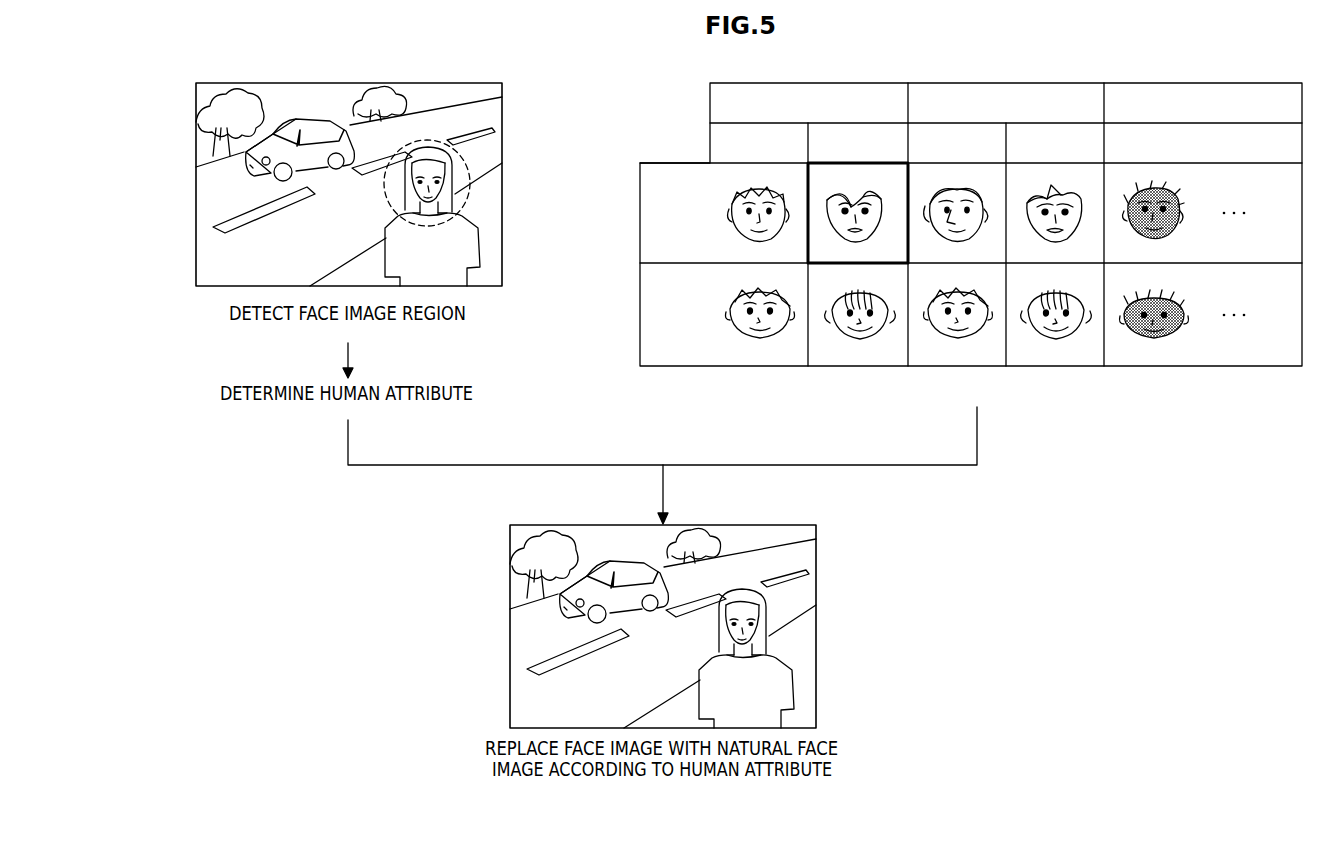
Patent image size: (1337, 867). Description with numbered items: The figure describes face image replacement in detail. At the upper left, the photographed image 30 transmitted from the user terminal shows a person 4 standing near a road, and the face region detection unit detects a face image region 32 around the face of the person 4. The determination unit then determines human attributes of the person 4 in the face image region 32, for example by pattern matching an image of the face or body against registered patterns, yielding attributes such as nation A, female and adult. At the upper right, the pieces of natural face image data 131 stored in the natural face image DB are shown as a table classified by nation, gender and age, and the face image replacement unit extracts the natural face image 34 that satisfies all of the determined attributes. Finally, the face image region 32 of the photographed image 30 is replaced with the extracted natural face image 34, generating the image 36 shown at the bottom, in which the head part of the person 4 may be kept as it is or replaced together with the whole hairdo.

The photographed image 30 is at (445, 83).
The face image region 32 is at (468, 160).
The person 4 is at (481, 238).
The natural face image data 131 is at (1060, 83).
The natural face image 34 is at (807, 248).
The image 36 is at (760, 525).